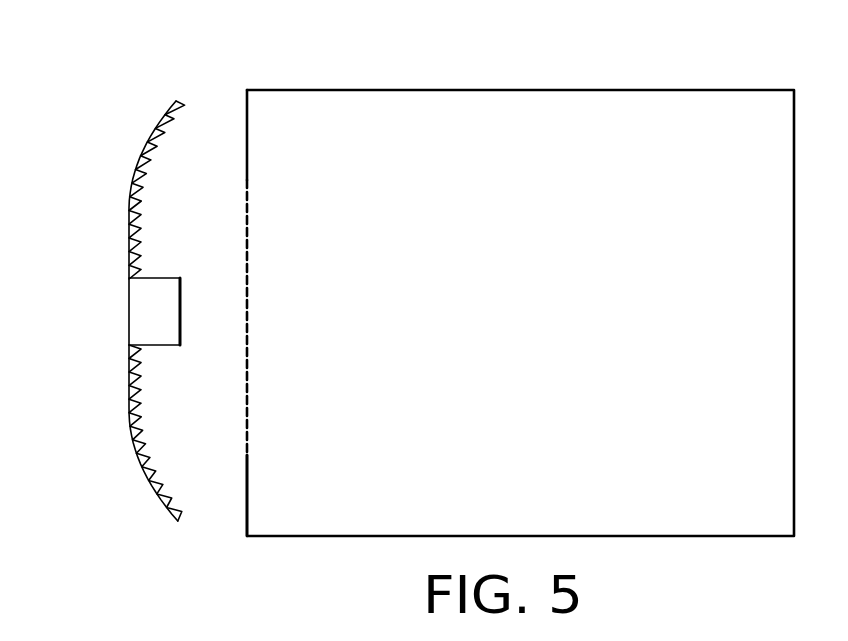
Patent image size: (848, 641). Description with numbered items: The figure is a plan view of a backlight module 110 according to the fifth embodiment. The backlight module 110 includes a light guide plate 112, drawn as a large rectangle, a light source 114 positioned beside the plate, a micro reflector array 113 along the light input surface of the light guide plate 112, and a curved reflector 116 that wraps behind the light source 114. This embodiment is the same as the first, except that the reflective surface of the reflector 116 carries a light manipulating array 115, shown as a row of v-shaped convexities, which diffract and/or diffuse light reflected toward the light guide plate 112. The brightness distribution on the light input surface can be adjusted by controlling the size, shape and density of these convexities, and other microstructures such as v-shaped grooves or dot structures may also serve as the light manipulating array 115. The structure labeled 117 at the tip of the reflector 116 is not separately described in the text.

The backlight module 110 is at (429, 51).
The light guide plate 112 is at (606, 89).
The micro reflector array 113 is at (245, 509).
The light source 114 is at (148, 312).
The light manipulating array 115 is at (143, 440).
The reflector 116 is at (129, 234).
The prism structures 117 is at (183, 118).